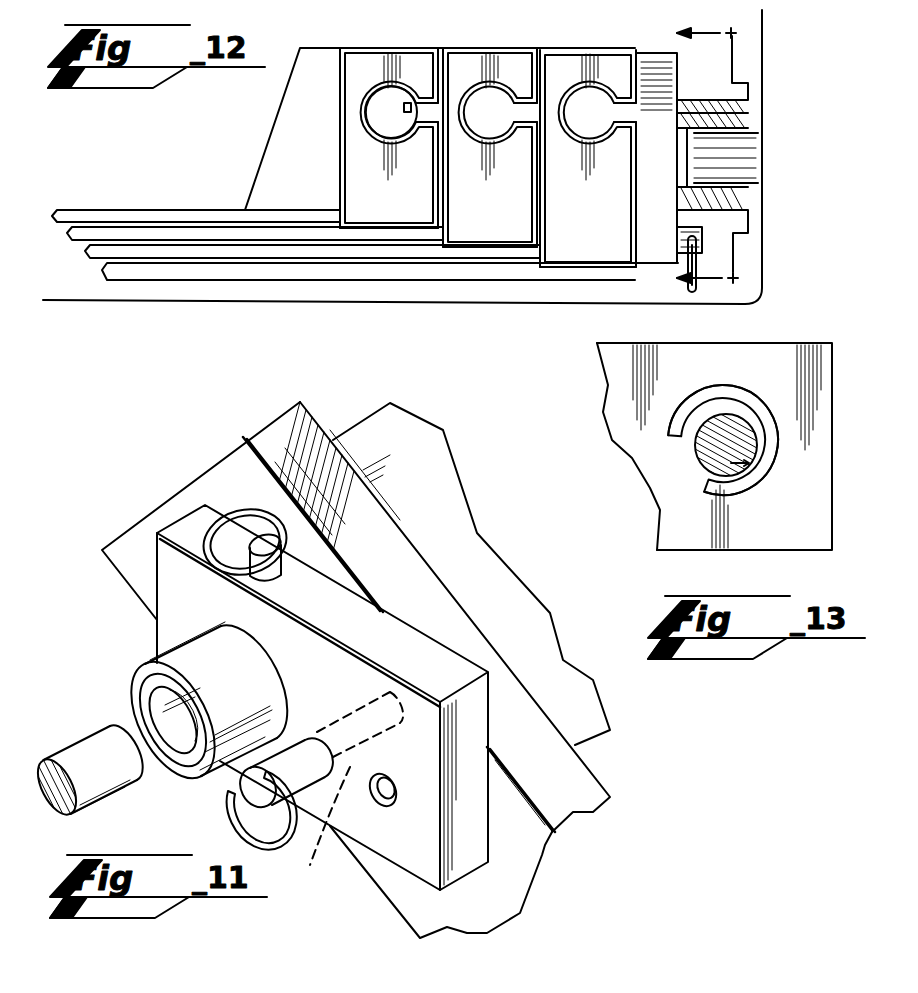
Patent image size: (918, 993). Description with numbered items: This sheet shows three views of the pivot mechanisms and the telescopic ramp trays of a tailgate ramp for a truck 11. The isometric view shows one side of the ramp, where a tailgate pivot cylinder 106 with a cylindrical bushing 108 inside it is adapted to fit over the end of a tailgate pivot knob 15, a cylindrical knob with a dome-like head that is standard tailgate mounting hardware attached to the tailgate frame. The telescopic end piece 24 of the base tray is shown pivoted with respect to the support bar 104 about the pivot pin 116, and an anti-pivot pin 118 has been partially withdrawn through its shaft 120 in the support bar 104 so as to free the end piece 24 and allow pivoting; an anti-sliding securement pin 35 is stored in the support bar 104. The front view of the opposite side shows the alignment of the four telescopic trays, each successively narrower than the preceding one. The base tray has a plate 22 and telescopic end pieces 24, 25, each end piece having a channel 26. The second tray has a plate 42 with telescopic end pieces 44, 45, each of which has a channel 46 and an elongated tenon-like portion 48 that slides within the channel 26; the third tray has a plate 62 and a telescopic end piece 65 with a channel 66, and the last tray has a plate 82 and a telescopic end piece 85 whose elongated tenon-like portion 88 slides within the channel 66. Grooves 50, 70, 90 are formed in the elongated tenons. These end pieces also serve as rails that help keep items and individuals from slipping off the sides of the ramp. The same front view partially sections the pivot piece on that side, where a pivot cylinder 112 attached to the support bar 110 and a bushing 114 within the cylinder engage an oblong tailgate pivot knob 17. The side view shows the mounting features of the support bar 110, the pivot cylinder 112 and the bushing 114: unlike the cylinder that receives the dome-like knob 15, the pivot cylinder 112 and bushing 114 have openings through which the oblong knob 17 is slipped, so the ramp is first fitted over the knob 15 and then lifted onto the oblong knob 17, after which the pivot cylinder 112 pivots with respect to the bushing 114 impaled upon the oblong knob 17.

In FIG. 12, the truck 11 is at (46, 8).
In FIG. 11, the tailgate pivot knob 15 is at (105, 787).
In FIG. 12, the oblong tailgate pivot knob 17 is at (750, 150).
In FIG. 13, the oblong tailgate pivot knob 17 is at (758, 463).
In FIG. 12, the plate 22 is at (245, 270).
In FIG. 11, the plate 22 is at (405, 428).
In FIG. 11, the telescopic end piece 24 is at (258, 446).
In FIG. 12, the telescopic end piece 25 is at (580, 243).
In FIG. 12, the channel 26 is at (613, 50).
In FIG. 11, the anti-sliding securement pin 35 is at (248, 537).
In FIG. 12, the plate 42 is at (190, 252).
In FIG. 12, the telescopic end piece 44 is at (503, 0).
In FIG. 12, the telescopic end piece 45 is at (478, 232).
In FIG. 12, the channel 46 is at (483, 73).
In FIG. 12, the elongated tenon-like portion 48 is at (580, 73).
In FIG. 12, the groove 50 is at (610, 120).
In FIG. 12, the plate 62 is at (145, 236).
In FIG. 12, the telescopic end piece 65 is at (377, 213).
In FIG. 12, the channel 66 is at (370, 80).
In FIG. 12, the groove 70 is at (510, 116).
In FIG. 12, the plate 82 is at (95, 212).
In FIG. 12, the telescopic end piece 85 is at (277, 110).
In FIG. 12, the elongated tenon-like portion 88 is at (390, 70).
In FIG. 12, the groove 90 is at (408, 114).
In FIG. 11, the support bar 104 is at (185, 528).
In FIG. 11, the tailgate pivot cylinder 106 is at (130, 681).
In FIG. 11, the bushing 108 is at (143, 700).
In FIG. 13, the support bar 110 is at (835, 373).
In FIG. 12, the pivot cylinder 112 is at (732, 97).
In FIG. 13, the pivot cylinder 112 is at (680, 427).
In FIG. 12, the bushing 114 is at (757, 118).
In FIG. 13, the bushing 114 is at (688, 465).
In FIG. 11, the pivot pin 116 is at (397, 803).
In FIG. 12, the anti-pivot pin 118 is at (663, 242).
In FIG. 11, the anti-pivot pin 118 is at (253, 790).
In FIG. 11, the shaft 120 is at (330, 872).